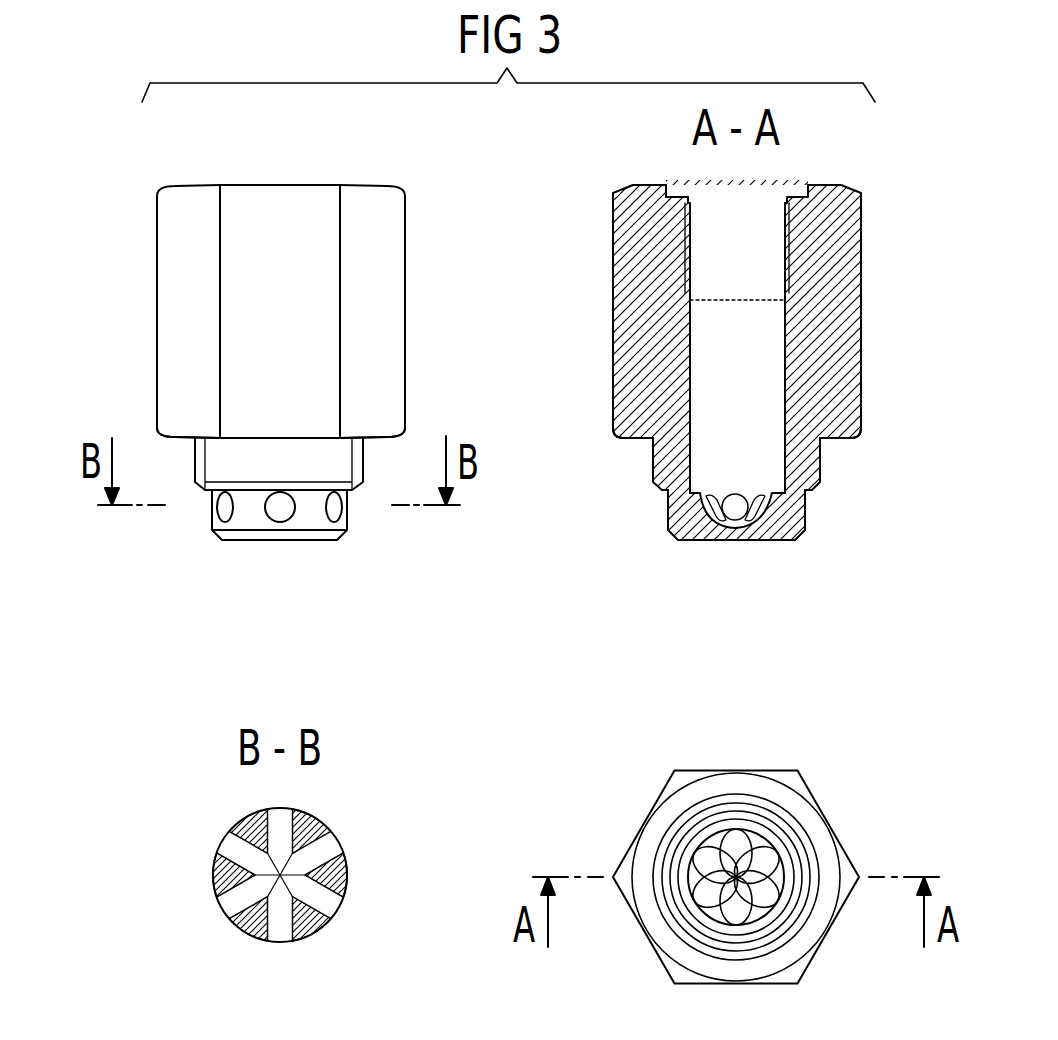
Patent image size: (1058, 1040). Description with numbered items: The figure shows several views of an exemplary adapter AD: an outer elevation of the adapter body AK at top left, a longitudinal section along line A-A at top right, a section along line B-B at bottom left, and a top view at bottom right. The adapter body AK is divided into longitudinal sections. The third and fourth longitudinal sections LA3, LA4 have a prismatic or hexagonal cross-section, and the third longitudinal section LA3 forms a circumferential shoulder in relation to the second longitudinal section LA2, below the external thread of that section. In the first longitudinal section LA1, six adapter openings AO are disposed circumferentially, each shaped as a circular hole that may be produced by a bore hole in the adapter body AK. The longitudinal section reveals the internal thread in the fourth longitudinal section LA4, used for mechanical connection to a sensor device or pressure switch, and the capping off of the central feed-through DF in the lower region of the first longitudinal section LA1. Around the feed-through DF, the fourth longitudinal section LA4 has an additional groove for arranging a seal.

The adapter AD is at (485, 355).
The adapter body AK is at (404, 273).
The adapter openings AO is at (280, 523).
The feed-through DF is at (758, 361).
The first longitudinal section LA1 is at (424, 553).
The second longitudinal section LA2 is at (182, 463).
The third longitudinal section LA3 is at (148, 412).
The fourth longitudinal section LA4 is at (148, 223).